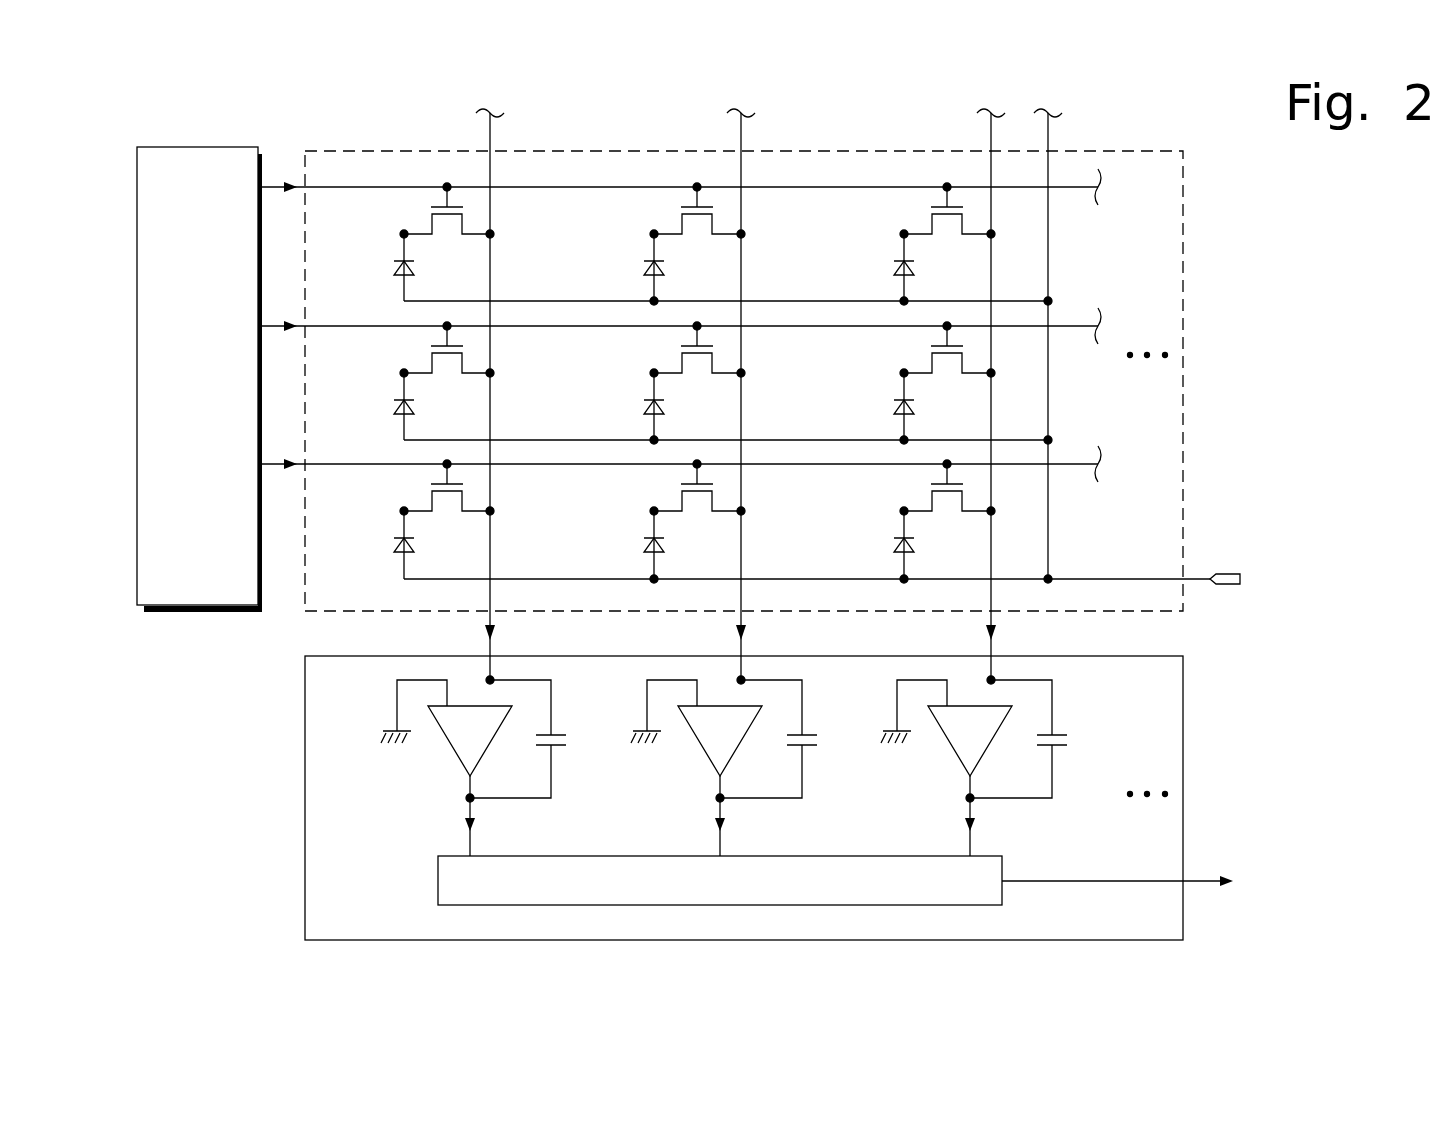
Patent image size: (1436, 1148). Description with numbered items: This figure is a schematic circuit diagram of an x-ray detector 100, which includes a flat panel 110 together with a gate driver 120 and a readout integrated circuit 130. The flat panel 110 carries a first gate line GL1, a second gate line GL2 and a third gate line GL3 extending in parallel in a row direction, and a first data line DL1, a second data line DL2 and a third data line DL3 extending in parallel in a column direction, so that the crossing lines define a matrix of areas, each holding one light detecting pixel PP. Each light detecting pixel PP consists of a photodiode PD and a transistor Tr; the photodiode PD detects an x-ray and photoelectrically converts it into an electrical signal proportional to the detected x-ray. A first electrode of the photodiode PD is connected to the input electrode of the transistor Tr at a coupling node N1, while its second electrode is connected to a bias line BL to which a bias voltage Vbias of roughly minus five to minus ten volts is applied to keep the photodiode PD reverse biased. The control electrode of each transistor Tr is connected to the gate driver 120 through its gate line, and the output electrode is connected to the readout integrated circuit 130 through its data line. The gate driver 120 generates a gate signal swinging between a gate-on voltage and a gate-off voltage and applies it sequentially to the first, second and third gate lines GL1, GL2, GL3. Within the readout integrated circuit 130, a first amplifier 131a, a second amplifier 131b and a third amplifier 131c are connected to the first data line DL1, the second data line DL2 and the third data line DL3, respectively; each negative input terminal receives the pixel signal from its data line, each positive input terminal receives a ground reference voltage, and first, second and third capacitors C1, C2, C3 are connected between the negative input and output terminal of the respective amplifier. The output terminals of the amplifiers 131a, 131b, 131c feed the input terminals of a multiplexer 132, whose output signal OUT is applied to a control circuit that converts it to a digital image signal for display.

The x-ray detector 100 is at (1178, 107).
The flat panel 110 is at (1184, 370).
The gate driver 120 is at (227, 147).
The readout integrated circuit 130 is at (1184, 750).
The first amplifier 131a is at (448, 757).
The second amplifier 131b is at (698, 757).
The third amplifier 131c is at (948, 757).
The multiplexer 132 is at (815, 856).
The coupling node N1 is at (394, 233).
The transistor Tr is at (469, 360).
The photodiode PD is at (421, 409).
The light detecting pixel PP is at (495, 381).
The first data line DL1 is at (488, 133).
The second data line DL2 is at (739, 133).
The third data line DL3 is at (989, 133).
The bias line BL is at (1050, 130).
The first gate line GL1 is at (1077, 467).
The second gate line GL2 is at (1077, 329).
The third gate line GL3 is at (1077, 190).
The first capacitor C1 is at (536, 739).
The second capacitor C2 is at (786, 739).
The third capacitor C3 is at (1036, 739).
The bias voltage Vbias is at (852, 581).
The signal output from the multiplexer OUT is at (1143, 883).